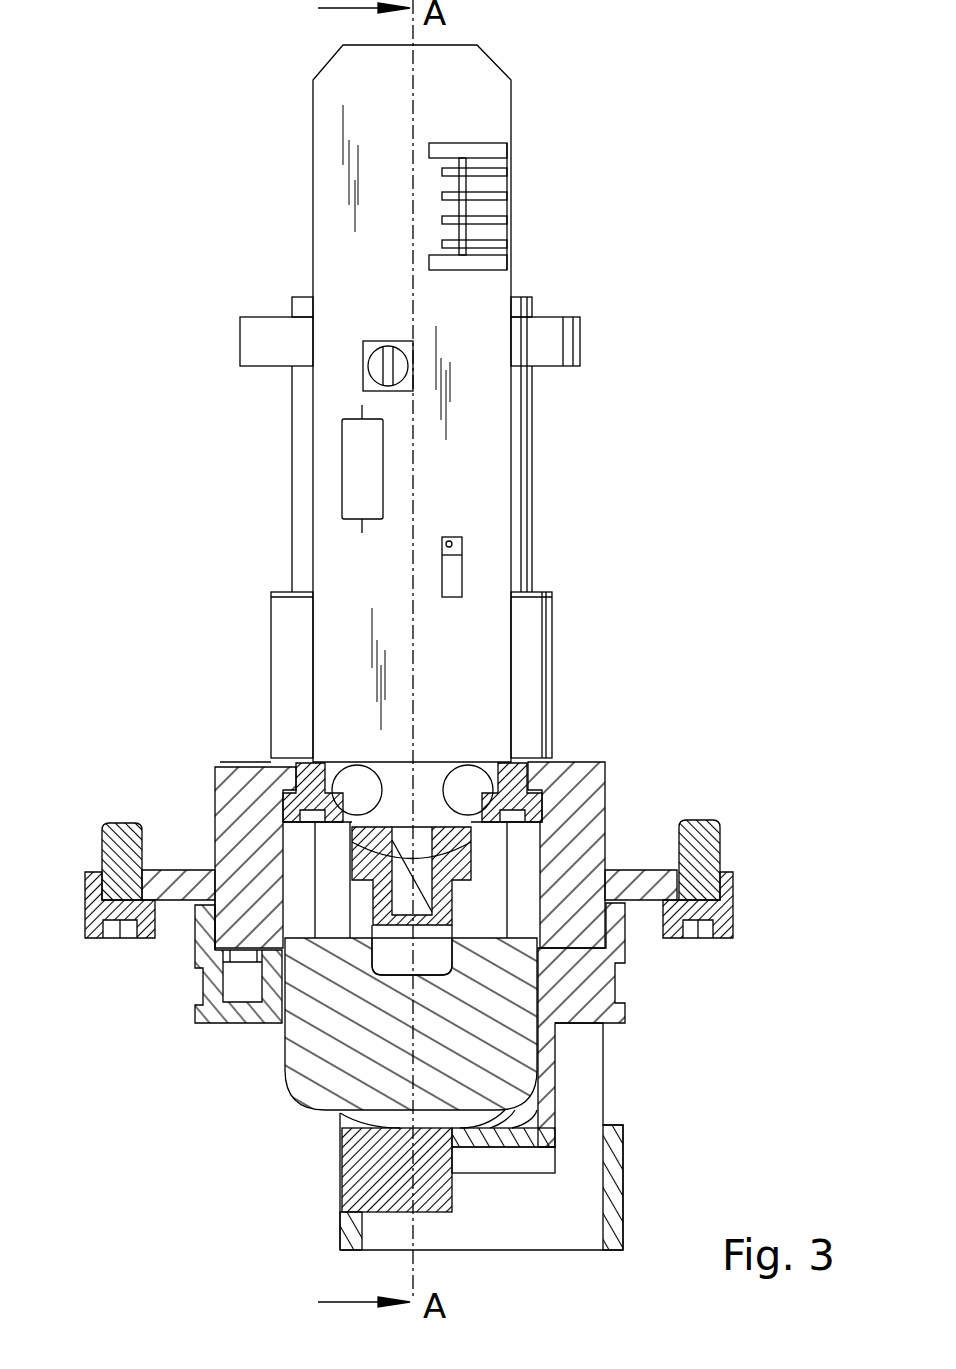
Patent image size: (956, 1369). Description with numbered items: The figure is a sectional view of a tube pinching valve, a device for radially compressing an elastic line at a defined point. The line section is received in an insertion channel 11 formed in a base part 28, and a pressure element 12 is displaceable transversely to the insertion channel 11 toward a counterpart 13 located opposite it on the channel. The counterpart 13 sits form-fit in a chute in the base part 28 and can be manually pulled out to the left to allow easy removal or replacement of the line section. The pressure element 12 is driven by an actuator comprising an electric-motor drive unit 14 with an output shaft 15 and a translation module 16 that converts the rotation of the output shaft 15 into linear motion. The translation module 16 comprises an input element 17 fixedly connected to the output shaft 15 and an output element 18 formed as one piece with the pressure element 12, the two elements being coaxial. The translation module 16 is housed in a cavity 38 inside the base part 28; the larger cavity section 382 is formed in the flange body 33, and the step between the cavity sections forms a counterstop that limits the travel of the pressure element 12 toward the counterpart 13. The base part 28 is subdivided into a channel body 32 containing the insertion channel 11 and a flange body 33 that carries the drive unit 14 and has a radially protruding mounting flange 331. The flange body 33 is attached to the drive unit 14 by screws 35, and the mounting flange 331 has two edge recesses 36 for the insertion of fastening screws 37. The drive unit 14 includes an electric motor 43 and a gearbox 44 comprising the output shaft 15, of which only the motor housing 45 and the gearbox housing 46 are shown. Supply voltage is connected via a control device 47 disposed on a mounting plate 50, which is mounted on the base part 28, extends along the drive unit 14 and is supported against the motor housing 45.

The insertion channel 11 is at (395, 1120).
The pressure element 12 is at (322, 1088).
The counterpart 13 is at (368, 1178).
The electric-motor drive unit 14 is at (288, 583).
The output shaft 15 is at (405, 868).
The translation module 16 is at (469, 916).
The input element 17 is at (475, 868).
The output element 18 is at (385, 962).
The base part 28 is at (634, 963).
The channel body 32 is at (598, 1012).
The flange body 33 is at (578, 778).
The mounting flange 331 is at (178, 870).
The screws 35 is at (300, 760).
The recesses 36 is at (92, 870).
The fastening screws 37 is at (120, 823).
The cavity 38 is at (302, 895).
The cavity section 382 is at (300, 922).
The electric motor 43 is at (291, 413).
The sleeve 44 is at (272, 635).
The motor housing 45 is at (303, 478).
The gearbox housing 46 is at (288, 697).
The control device 47 is at (479, 466).
The mounting plate 50 is at (484, 413).